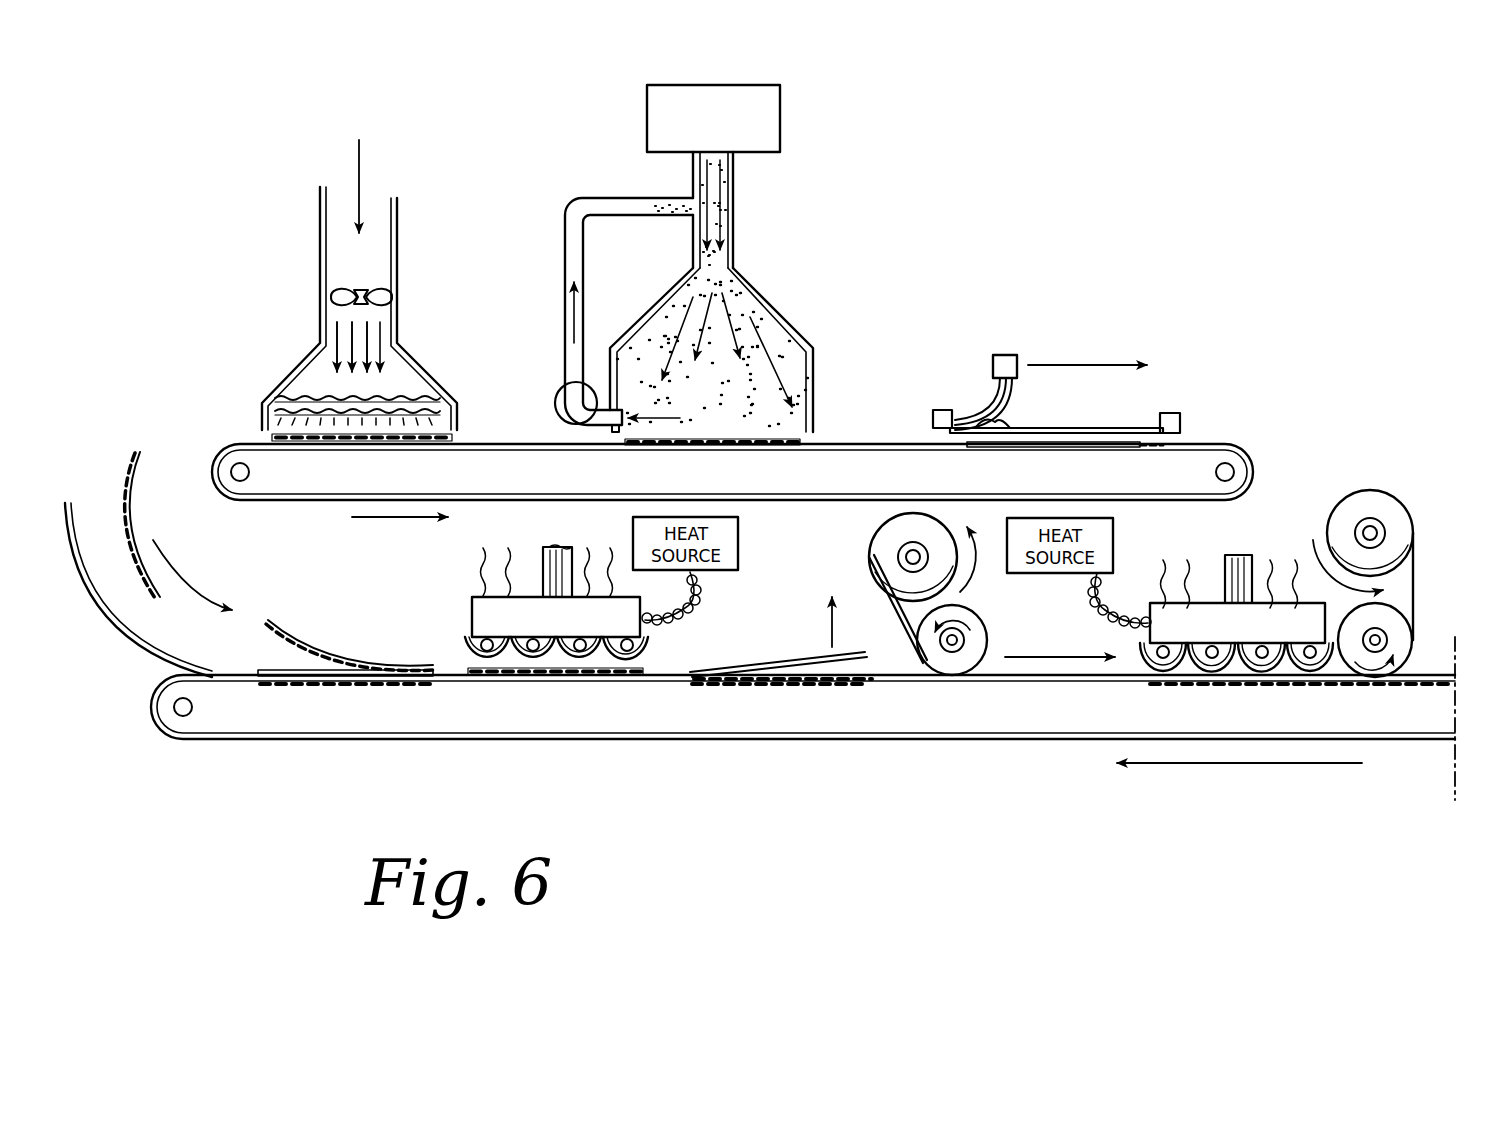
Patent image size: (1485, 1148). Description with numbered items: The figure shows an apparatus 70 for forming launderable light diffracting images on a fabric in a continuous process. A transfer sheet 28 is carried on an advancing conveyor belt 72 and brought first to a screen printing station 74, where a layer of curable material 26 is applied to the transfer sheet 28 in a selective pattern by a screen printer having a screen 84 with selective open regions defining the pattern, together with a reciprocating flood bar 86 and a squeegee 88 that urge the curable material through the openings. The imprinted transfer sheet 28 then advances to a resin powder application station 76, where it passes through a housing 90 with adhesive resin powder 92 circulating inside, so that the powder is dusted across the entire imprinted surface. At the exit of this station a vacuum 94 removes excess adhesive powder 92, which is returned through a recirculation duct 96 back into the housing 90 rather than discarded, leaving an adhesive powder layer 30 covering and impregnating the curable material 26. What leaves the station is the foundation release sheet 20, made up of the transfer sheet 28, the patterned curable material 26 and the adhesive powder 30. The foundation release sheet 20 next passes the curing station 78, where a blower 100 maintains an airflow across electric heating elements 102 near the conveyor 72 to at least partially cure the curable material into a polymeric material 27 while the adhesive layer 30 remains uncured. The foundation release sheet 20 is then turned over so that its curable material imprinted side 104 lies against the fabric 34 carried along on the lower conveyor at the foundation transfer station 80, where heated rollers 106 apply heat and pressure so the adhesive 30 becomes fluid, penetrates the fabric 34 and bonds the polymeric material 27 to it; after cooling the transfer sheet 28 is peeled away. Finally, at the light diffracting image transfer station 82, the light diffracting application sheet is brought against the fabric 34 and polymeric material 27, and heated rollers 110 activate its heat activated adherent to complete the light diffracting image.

The foundation release sheet 20 is at (242, 428).
The layer of curable material 26 is at (745, 442).
The polymeric material 27 is at (432, 408).
The transfer sheet 28 is at (160, 460).
The adhesive powder layer 30 is at (455, 437).
The fabric 34 is at (296, 678).
The apparatus 70 is at (1258, 148).
The conveyor belt 72 is at (1236, 446).
The screen printing station 74 is at (1158, 272).
The resin powder application station 76 is at (835, 203).
The curing station 78 is at (425, 170).
The foundation transfer station 80 is at (445, 596).
The light diffracting image transfer station 82 is at (1412, 492).
The screen 84 is at (1122, 428).
The flood bar 86 is at (1003, 398).
The squeegee 88 is at (980, 405).
The housing 90 is at (757, 292).
The adhesive resin powder 92 is at (795, 333).
The vacuum 94 is at (555, 412).
The recirculation duct 96 is at (570, 210).
The blower 100 is at (380, 291).
The electric heating elements 102 is at (390, 400).
The curable material imprinted side 104 is at (140, 455).
The heated rollers 106 is at (468, 648).
The heated rollers 110 is at (1148, 645).